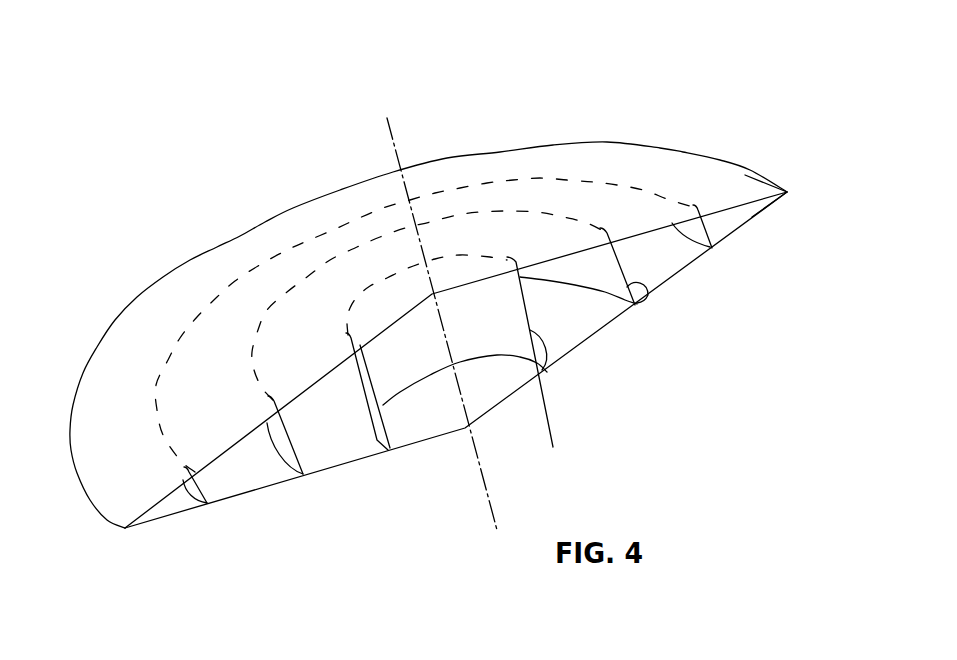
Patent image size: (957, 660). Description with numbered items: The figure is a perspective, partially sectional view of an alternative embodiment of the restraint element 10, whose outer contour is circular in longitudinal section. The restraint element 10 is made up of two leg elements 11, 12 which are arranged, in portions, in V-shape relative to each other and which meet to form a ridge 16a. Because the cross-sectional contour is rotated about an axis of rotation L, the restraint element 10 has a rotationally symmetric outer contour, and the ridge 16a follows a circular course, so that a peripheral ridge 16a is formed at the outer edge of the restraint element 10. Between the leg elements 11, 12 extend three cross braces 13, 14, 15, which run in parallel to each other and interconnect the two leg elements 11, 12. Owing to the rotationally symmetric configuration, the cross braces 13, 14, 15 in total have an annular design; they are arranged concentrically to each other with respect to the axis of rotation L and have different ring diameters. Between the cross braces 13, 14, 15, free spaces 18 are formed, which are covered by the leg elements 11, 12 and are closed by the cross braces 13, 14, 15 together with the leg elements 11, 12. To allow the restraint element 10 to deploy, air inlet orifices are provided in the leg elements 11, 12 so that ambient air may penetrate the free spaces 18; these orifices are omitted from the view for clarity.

The restraint element 10 is at (447, 284).
The leg element 11 is at (605, 160).
The leg element 12 is at (365, 461).
The cross brace 13 is at (534, 369).
The cross brace 14 is at (641, 282).
The cross brace 15 is at (712, 221).
The ridge 16a is at (757, 175).
The free spaces 18 is at (735, 217).
The axis of rotation L is at (388, 150).